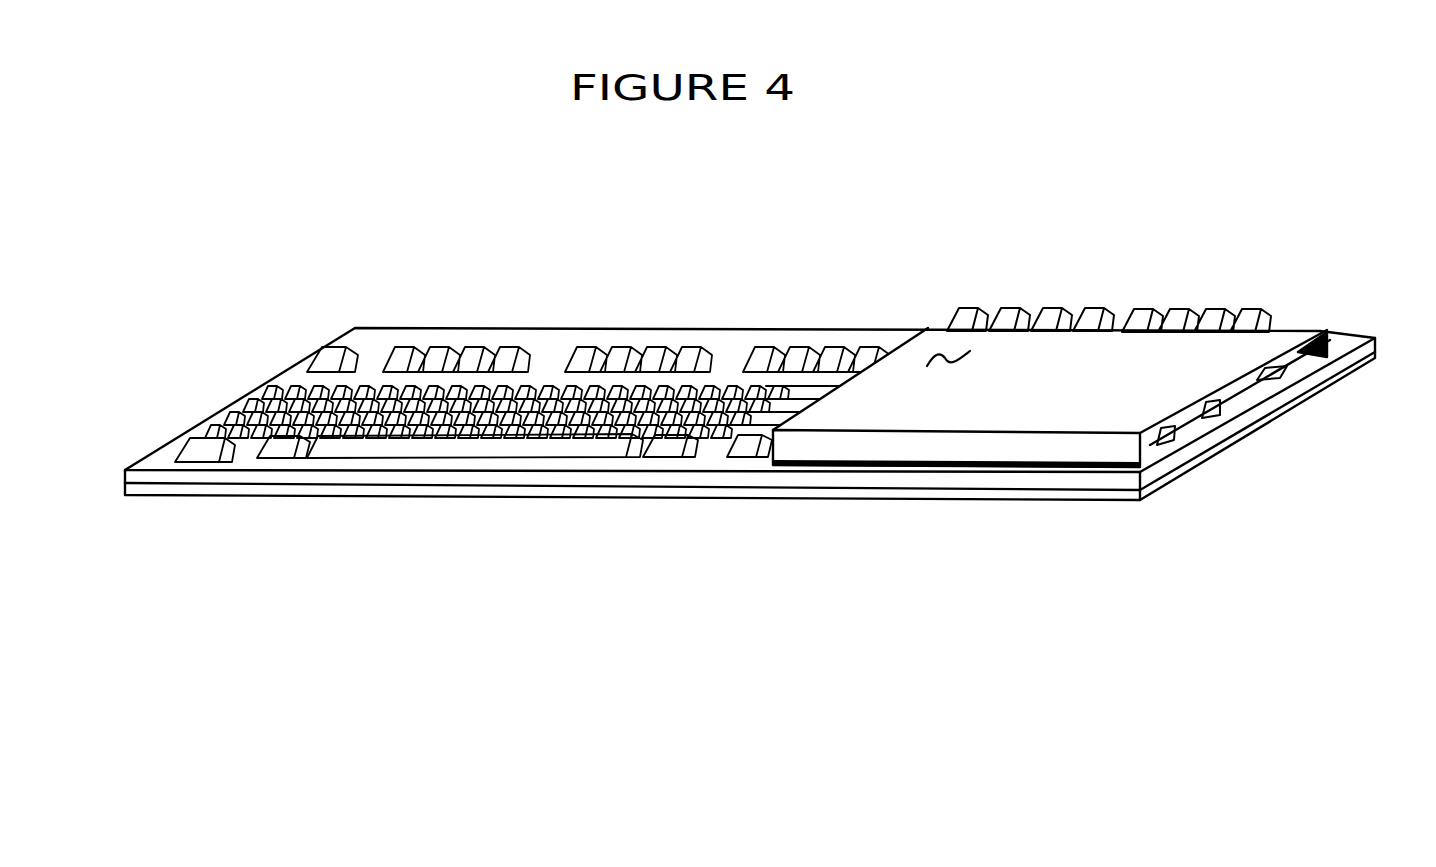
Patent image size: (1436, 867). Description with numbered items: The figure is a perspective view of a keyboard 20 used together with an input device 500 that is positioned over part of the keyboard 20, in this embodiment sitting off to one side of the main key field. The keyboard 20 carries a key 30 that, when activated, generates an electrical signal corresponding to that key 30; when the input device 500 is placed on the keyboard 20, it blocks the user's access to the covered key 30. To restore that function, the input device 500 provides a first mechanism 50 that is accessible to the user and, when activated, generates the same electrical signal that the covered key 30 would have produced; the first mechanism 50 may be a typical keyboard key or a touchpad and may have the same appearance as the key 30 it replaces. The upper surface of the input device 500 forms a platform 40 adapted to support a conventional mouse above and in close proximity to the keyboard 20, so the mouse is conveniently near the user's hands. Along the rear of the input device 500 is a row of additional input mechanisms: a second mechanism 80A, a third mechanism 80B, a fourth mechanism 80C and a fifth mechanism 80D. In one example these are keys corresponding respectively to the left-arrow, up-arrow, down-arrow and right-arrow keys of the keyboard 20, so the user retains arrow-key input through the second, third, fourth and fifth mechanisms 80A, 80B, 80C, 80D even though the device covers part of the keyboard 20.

The keyboard 20 is at (509, 332).
The key 30 is at (1185, 425).
The platform 40 is at (922, 331).
The first mechanism 50 is at (1296, 323).
The second mechanism 80A is at (973, 326).
The third mechanism 80B is at (1016, 318).
The fourth mechanism 80C is at (1050, 318).
The fifth mechanism 80D is at (1103, 324).
The input device 500 is at (939, 300).